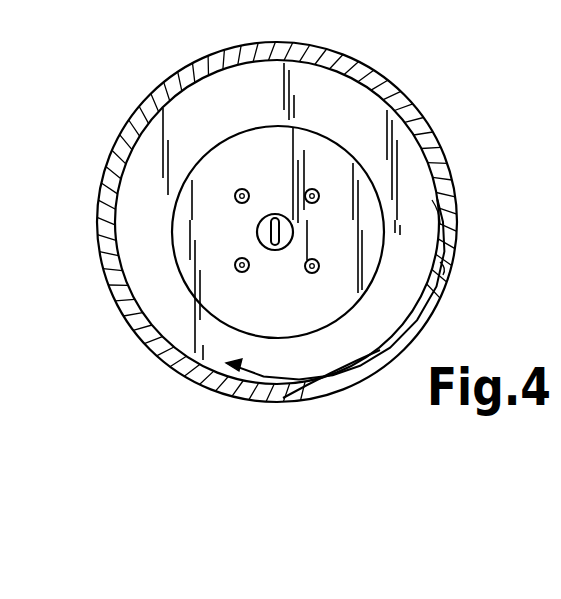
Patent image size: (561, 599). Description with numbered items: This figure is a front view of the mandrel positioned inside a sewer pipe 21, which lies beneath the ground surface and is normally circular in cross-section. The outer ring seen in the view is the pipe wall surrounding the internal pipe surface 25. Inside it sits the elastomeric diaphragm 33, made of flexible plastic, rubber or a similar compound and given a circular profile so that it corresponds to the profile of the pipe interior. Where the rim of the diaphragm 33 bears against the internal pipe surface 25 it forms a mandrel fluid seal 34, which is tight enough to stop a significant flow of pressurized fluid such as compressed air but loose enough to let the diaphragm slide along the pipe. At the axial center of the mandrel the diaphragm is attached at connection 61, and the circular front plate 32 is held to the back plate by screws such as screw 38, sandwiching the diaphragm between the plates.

The sewer pipe 21 is at (431, 133).
The front plate 32 is at (279, 167).
The screw 38 is at (242, 273).
The connection 61 is at (303, 243).
The mandrel fluid seal 34 is at (307, 388).
The elastomeric diaphragm 33 is at (436, 230).
The internal pipe surface 25 is at (440, 262).